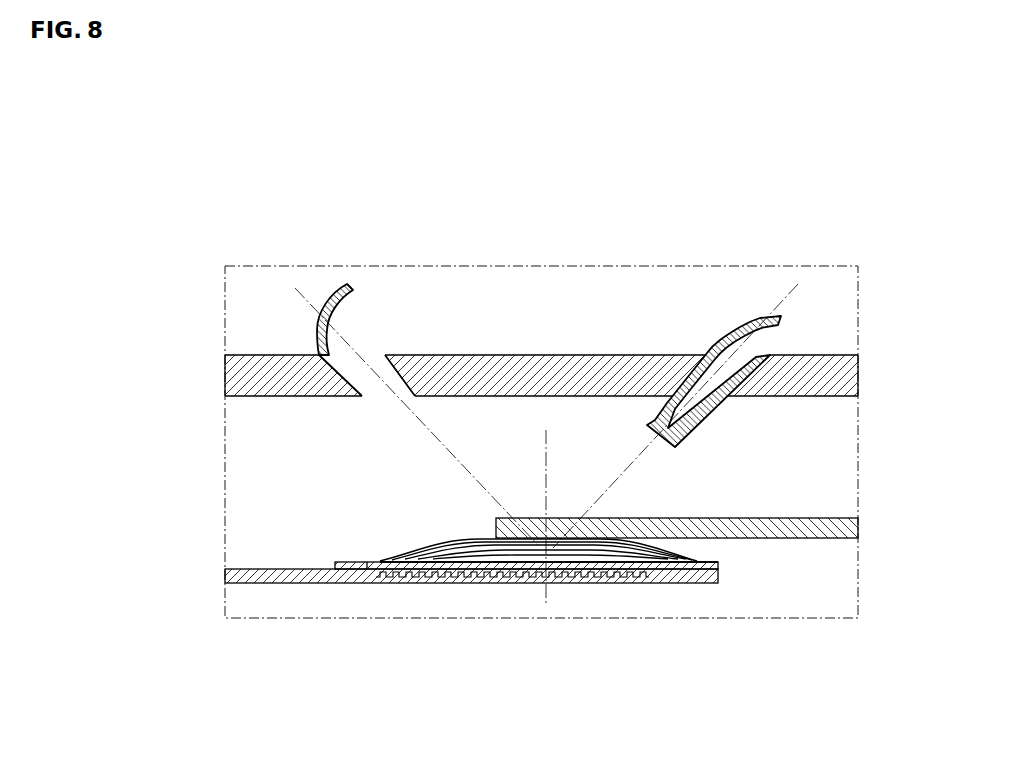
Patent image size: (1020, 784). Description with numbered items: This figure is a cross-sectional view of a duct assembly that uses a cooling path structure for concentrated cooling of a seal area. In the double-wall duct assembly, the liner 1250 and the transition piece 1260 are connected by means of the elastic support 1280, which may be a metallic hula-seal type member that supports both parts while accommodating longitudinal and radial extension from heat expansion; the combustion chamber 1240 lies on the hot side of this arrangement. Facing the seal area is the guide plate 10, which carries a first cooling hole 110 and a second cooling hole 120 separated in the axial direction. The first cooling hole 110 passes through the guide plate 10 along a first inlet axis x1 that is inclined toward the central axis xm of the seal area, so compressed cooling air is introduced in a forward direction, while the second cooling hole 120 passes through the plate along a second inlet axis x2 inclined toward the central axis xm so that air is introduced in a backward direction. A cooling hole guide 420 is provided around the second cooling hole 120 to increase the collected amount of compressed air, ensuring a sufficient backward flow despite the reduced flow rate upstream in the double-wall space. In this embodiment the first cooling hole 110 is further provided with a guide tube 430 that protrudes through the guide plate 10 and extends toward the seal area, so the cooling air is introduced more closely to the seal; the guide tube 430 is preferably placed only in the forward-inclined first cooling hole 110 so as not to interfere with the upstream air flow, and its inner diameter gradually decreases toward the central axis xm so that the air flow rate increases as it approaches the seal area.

The guide plate 10 is at (540, 355).
The first cooling hole 110 is at (745, 357).
The second cooling hole 120 is at (378, 371).
The cooling hole guide 420 is at (333, 297).
The guide tube 430 is at (722, 402).
The first inlet axis x1 is at (788, 298).
The second inlet axis x2 is at (314, 298).
The central axis xm is at (543, 595).
The combustion chamber 1240 is at (373, 603).
The liner 1250 is at (288, 583).
The transition piece 1260 is at (792, 538).
The elastic support 1280 is at (450, 543).